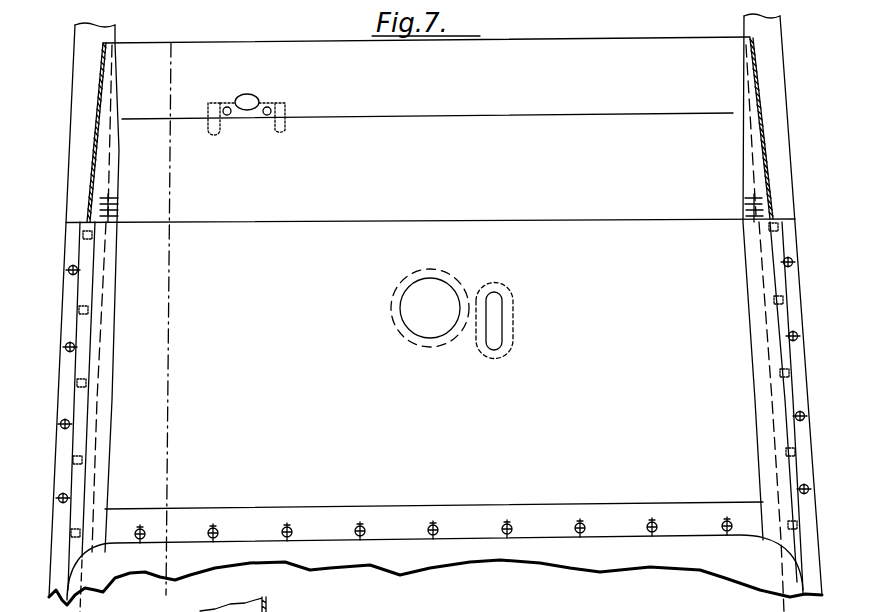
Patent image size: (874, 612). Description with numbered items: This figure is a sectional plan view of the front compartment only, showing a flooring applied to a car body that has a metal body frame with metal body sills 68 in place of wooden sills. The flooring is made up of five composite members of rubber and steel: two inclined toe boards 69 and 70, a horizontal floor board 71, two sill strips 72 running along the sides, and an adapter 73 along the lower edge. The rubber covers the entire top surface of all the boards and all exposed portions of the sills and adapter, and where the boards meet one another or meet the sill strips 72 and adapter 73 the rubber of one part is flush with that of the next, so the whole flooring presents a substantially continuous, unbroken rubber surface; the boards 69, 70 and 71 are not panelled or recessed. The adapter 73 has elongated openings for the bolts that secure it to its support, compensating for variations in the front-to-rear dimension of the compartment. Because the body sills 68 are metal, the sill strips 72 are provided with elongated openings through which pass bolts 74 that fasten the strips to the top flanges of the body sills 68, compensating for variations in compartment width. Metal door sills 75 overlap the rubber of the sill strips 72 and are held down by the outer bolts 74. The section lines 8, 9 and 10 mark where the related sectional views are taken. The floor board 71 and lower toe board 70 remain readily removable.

The section line 8— 8 is at (173, 307).
The section line 9— 9 is at (795, 165).
The section line 10— 10 is at (828, 415).
The metal body sills 68 is at (786, 30).
The inclined toe board 69 is at (426, 67).
The inclined toe board 70 is at (427, 143).
The horizontal floor board 71 is at (430, 289).
The sill strips 72 is at (112, 262).
The adapter 73 is at (556, 513).
The bolts 74 is at (63, 425).
The metal door sills 75 is at (73, 323).